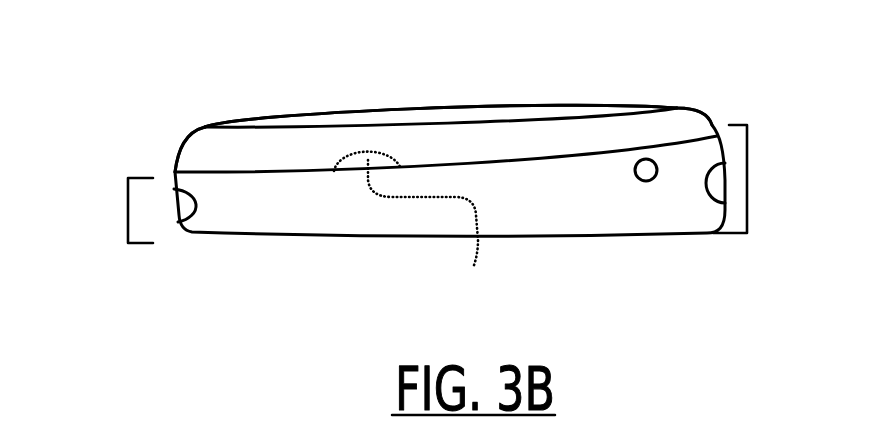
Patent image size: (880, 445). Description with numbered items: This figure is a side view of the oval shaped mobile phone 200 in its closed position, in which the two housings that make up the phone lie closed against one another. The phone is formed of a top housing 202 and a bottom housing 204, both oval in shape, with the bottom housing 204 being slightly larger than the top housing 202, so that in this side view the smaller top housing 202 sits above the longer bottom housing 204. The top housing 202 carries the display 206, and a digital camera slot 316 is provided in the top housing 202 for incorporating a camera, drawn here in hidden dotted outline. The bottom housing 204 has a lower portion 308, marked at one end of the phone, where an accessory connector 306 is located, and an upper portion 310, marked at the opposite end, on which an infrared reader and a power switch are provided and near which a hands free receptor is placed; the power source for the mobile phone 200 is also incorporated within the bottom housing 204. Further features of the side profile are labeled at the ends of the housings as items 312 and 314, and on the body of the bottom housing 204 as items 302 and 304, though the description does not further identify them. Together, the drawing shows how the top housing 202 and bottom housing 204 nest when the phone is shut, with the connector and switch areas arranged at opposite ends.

The mobile phone 200 is at (248, 86).
The top housing 202 is at (638, 122).
The bottom housing 204 is at (423, 225).
The display 206 is at (417, 110).
The opening / sensor port 302 is at (647, 181).
The right side button 304 is at (707, 182).
The accessory connector 306 is at (184, 228).
The lower portion 308 is at (128, 213).
The upper portion 310 is at (747, 163).
The left end tip of housing 312 is at (175, 172).
The right end corner of housing 314 is at (710, 124).
The digital camera slot 316 is at (415, 231).